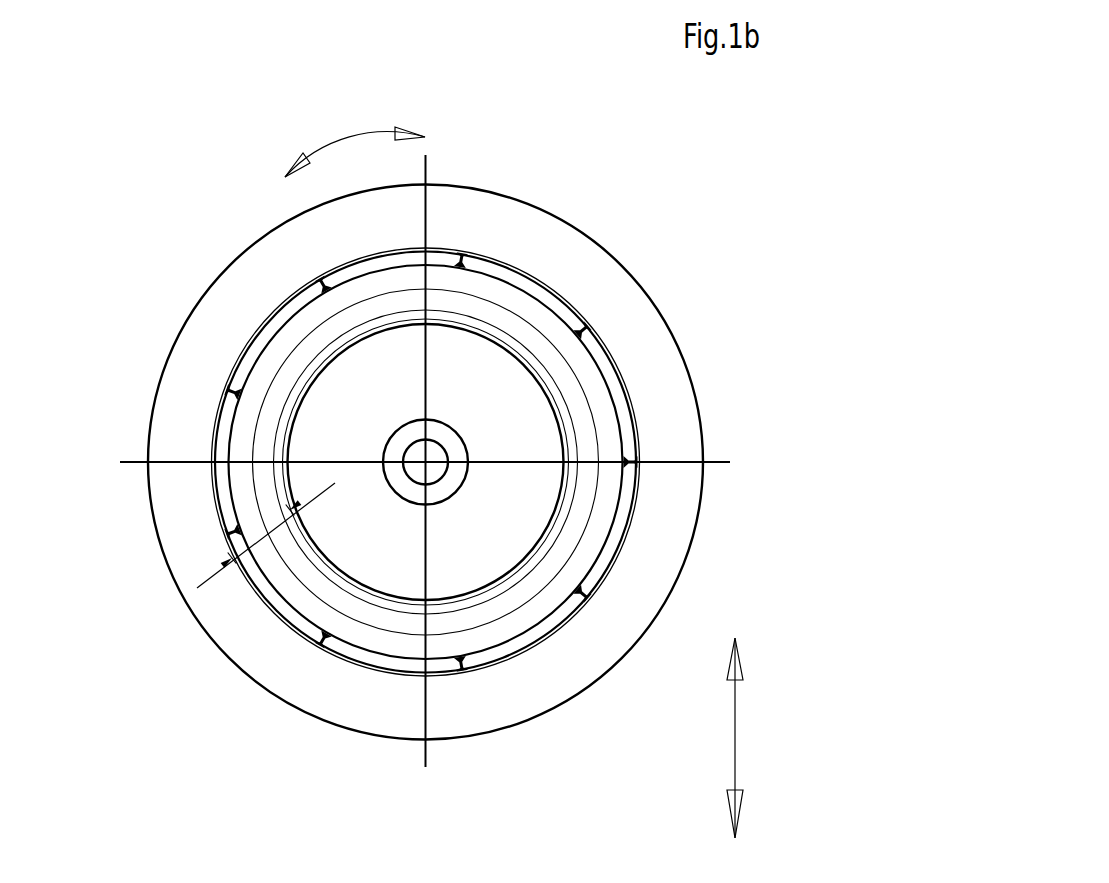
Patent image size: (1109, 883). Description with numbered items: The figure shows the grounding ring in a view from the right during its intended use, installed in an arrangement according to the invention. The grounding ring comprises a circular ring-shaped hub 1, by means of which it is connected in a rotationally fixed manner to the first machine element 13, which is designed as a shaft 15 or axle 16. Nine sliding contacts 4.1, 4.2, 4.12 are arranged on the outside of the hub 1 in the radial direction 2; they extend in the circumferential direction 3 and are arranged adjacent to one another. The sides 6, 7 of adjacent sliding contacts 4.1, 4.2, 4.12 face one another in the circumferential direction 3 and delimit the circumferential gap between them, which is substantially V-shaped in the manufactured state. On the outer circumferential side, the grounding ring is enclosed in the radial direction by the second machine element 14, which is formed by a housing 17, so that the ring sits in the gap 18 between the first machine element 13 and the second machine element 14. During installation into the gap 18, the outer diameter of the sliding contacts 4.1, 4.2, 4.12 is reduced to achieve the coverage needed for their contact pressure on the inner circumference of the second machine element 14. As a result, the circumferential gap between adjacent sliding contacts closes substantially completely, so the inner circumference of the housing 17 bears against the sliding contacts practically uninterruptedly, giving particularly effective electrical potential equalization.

The hub 1 is at (552, 454).
The radial direction 2 is at (816, 738).
The circumferential direction 3 is at (350, 114).
The sliding contact 4.1 is at (475, 400).
The sliding contact 4.12 is at (475, 400).
The sliding contact 4.2 is at (475, 400).
The side of sliding contact 6 is at (501, 418).
The side of sliding contact 7 is at (501, 418).
The first machine element 13 is at (303, 507).
The second machine element 14 is at (380, 481).
The shaft 15 is at (303, 507).
The axle 16 is at (303, 507).
The housing 17 is at (380, 481).
The gap 18 is at (186, 488).